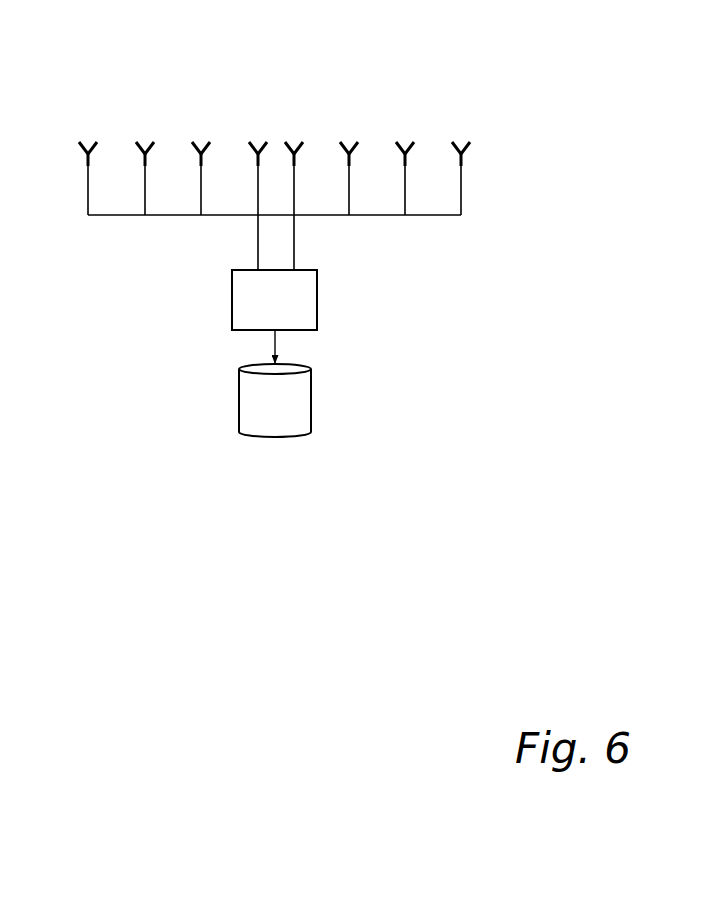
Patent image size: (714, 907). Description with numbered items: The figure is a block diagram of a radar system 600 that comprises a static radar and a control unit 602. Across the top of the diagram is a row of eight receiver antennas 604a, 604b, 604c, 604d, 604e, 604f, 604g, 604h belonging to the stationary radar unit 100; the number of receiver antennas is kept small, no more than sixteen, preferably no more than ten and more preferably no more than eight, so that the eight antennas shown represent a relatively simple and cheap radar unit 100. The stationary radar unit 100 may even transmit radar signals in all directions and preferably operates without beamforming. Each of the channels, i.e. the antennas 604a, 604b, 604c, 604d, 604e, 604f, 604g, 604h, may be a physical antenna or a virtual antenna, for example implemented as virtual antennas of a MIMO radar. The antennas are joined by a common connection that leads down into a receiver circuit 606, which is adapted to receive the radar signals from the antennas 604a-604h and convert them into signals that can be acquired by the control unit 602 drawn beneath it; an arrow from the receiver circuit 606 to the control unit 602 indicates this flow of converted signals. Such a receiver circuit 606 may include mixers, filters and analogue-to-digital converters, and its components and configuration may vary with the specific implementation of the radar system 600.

The stationary radar unit 100 is at (438, 461).
The radar system 600 is at (158, 305).
The control unit 602 is at (298, 412).
The receiver antenna 604a is at (88, 136).
The receiver antenna 604b is at (145, 136).
The receiver antenna 604c is at (201, 136).
The receiver antenna 604d is at (258, 136).
The receiver antenna 604e is at (294, 136).
The receiver antenna 604f is at (349, 136).
The receiver antenna 604g is at (405, 136).
The receiver antenna 604h is at (461, 136).
The receiver circuit 606 is at (297, 313).